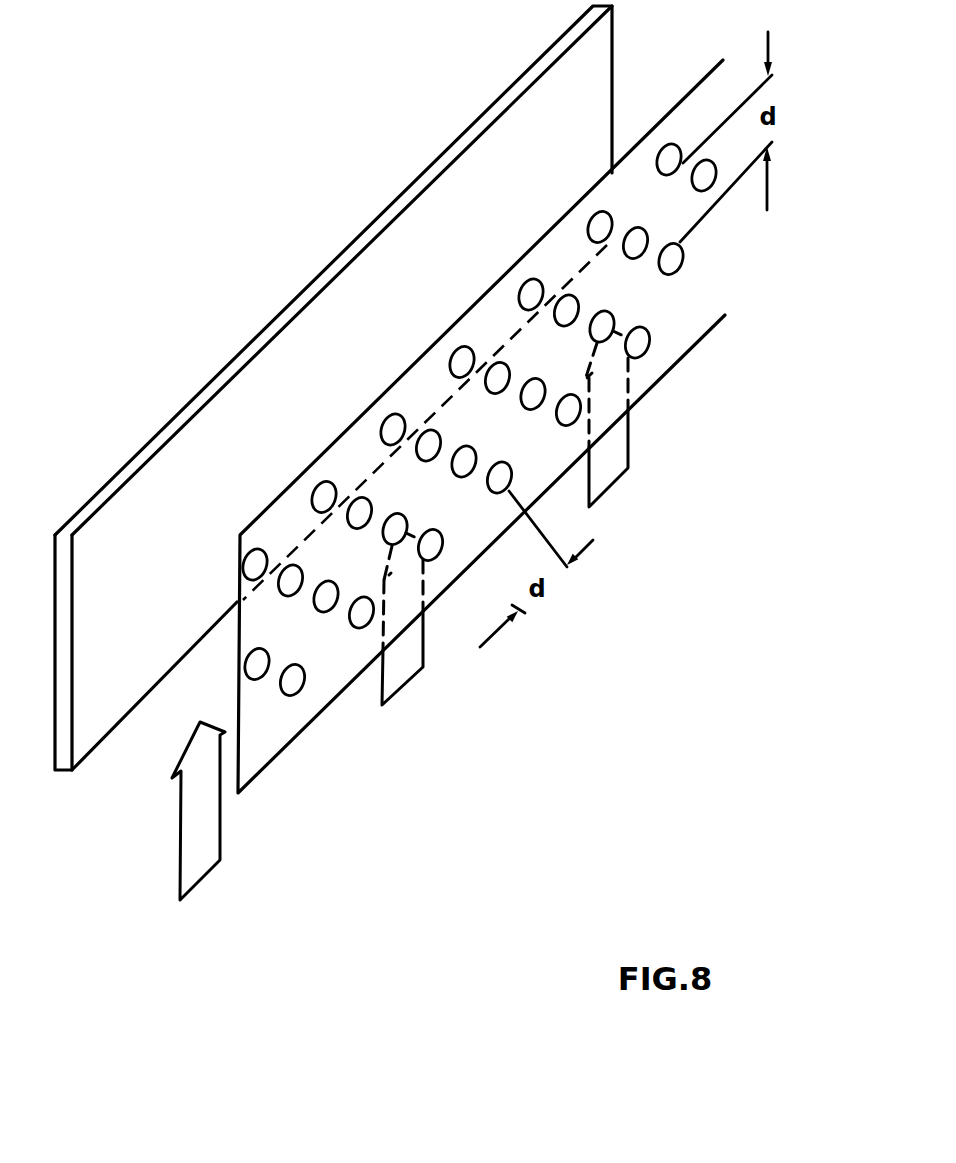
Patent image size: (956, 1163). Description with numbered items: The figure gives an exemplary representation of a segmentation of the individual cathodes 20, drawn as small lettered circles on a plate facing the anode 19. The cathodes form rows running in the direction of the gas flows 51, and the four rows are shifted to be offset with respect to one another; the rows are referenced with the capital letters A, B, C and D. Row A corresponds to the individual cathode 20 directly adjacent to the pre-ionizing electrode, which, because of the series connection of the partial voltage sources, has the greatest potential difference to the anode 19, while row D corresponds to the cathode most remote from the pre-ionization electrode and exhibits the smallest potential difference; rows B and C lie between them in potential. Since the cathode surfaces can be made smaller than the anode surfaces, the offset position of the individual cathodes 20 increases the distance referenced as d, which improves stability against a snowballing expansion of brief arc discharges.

The anode 19 is at (410, 232).
The individual cathodes 20 is at (279, 592).
The gas flows 51 is at (222, 812).